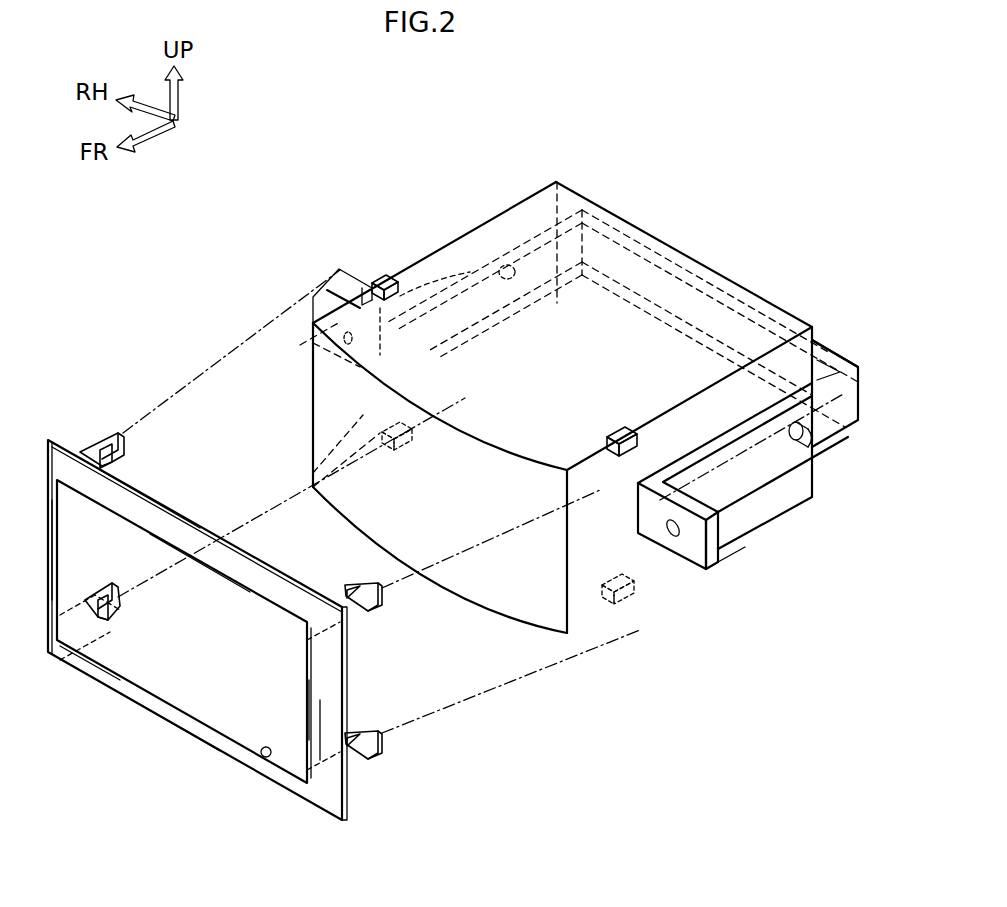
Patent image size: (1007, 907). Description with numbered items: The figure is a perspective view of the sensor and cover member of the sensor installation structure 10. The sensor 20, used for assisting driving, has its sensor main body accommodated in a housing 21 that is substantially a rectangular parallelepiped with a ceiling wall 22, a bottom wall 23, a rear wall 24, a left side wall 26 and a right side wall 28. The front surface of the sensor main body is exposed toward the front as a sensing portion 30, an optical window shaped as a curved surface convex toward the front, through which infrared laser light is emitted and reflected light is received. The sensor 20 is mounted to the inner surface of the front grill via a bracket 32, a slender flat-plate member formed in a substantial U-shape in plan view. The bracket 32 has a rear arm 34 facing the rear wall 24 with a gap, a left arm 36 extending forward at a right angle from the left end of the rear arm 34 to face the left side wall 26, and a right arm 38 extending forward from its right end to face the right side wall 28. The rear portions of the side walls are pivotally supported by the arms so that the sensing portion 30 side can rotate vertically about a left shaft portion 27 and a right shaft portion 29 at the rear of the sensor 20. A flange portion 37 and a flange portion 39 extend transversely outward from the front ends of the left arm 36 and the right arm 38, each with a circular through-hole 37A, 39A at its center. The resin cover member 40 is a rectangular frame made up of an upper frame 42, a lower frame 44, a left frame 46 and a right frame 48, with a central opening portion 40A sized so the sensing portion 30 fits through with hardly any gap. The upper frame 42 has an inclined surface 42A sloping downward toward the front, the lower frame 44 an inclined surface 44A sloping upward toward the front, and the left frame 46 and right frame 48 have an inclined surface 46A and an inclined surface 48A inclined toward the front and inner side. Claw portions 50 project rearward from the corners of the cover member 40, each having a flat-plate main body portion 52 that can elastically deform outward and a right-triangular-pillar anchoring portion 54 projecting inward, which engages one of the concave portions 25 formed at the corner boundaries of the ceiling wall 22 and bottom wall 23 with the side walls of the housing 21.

The sensor installation structure 10 is at (283, 250).
The sensor 20 is at (490, 195).
The housing 21 is at (556, 182).
The ceiling wall 22 is at (613, 317).
The bottom wall 23 is at (757, 530).
The rear wall 24 is at (712, 268).
The concave portions 25 is at (378, 288).
The left side wall 26 is at (715, 575).
The left shaft portion 27 is at (812, 442).
The right side wall 28 is at (455, 265).
The right shaft portion 29 is at (507, 265).
The sensing portion 30 is at (385, 520).
The bracket 32 is at (858, 368).
The rear arm 34 is at (840, 357).
The left arm 36 is at (763, 505).
The flange portion 37 is at (697, 540).
The through-hole 37A is at (675, 537).
The right arm 38 is at (460, 275).
The flange portion 39 is at (305, 325).
The through-hole 39A is at (340, 350).
The cover member 40 is at (48, 440).
The opening portion 40A is at (266, 758).
The upper frame 42 is at (150, 490).
The inclined surface 42A is at (210, 555).
The lower frame 44 is at (165, 735).
The inclined surface 44A is at (98, 672).
The left frame 46 is at (347, 800).
The inclined surface 46A is at (325, 705).
The right frame 48 is at (58, 568).
The inclined surface 48A is at (48, 635).
The claw portions 50 is at (100, 438).
The main body portion 52 is at (72, 622).
The anchoring portion 54 is at (112, 603).